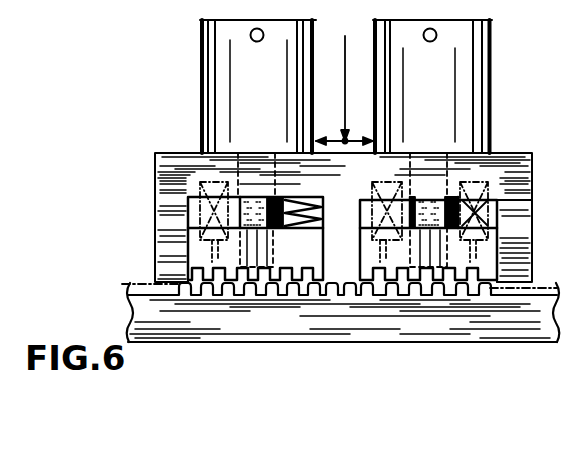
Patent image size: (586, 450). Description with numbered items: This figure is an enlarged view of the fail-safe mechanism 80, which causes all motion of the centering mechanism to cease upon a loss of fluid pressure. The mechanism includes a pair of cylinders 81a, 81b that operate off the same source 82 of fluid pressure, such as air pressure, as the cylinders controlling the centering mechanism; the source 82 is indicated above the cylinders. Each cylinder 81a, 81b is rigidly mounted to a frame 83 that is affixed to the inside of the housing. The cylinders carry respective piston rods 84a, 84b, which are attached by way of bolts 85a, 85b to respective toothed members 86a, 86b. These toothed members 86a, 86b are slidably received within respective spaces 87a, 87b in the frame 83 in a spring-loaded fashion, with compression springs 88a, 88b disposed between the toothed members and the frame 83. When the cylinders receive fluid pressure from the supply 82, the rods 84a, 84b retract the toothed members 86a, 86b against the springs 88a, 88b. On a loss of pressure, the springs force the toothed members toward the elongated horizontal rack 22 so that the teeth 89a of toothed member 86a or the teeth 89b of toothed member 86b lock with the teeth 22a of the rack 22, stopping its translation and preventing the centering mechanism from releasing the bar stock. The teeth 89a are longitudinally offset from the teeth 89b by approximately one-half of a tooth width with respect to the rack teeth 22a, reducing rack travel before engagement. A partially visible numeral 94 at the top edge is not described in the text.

The lever 94 is at (77, 7).
The fail-safe mechanism 80 is at (122, 142).
The cylinder 81a is at (208, 73).
The cylinder 81b is at (492, 42).
The source of fluid pressure 82 is at (345, 36).
The frame 83 is at (170, 173).
The piston rod 84a is at (250, 197).
The piston rod 84b is at (430, 197).
The bolt 85a is at (242, 290).
The bolt 85b is at (437, 290).
The toothed member 86a is at (188, 256).
The toothed member 86b is at (487, 258).
The space 87a is at (188, 224).
The space 87b is at (497, 213).
The compression spring 88a is at (321, 214).
The compression spring 88b is at (498, 200).
The teeth 89a is at (220, 280).
The teeth 89b is at (467, 280).
The elongated horizontal rack 22 is at (312, 332).
The teeth 22a is at (333, 290).